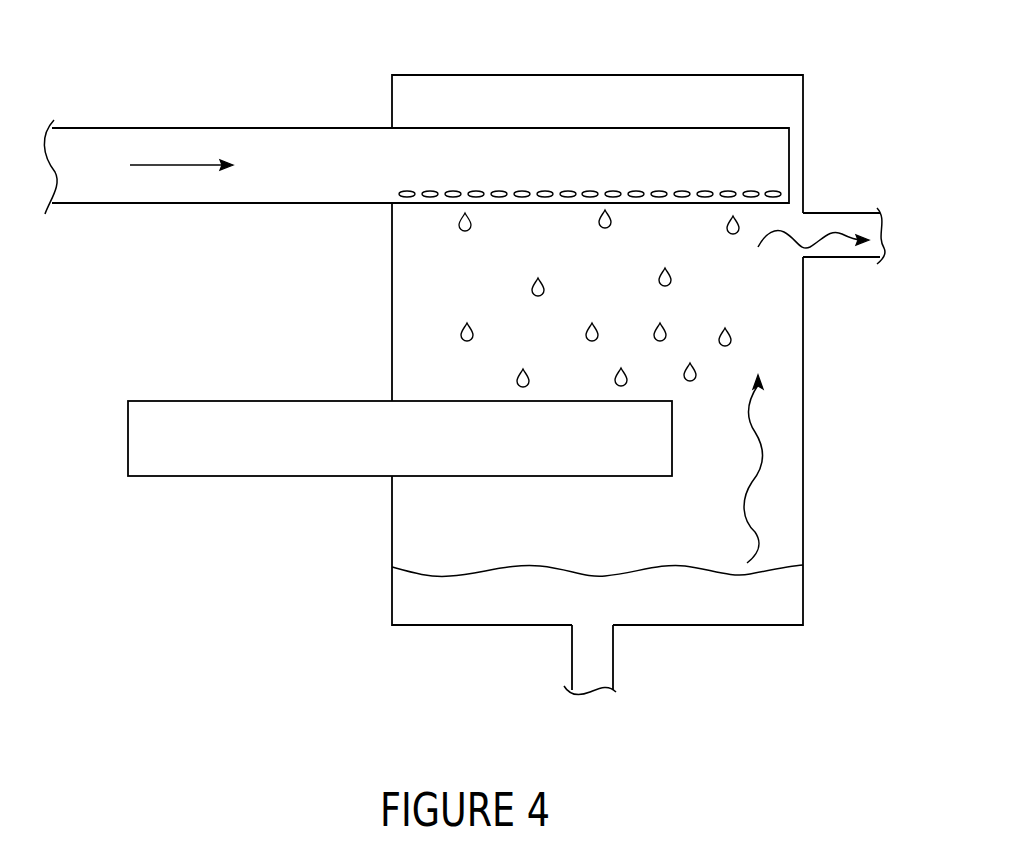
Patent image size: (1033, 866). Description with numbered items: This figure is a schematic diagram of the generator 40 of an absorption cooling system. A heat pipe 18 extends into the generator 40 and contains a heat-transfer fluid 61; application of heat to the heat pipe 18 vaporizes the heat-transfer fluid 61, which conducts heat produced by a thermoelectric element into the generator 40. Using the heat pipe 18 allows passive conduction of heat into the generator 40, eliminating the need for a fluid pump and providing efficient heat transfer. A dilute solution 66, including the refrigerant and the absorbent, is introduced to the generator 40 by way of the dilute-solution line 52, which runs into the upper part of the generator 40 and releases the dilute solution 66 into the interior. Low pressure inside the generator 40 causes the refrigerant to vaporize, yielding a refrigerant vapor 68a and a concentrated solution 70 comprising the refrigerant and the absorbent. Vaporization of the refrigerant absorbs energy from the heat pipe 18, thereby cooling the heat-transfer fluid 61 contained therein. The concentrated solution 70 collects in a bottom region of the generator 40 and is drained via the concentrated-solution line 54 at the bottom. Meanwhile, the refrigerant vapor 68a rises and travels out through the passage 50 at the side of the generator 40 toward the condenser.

The generator 40 is at (725, 75).
The dilute-solution line 52 is at (343, 128).
The dilute solution 66 is at (183, 165).
The passage 50 is at (841, 213).
The refrigerant vapor 68a is at (807, 246).
The heat pipe 18 is at (312, 400).
The heat-transfer fluid 61 is at (400, 438).
The concentrated solution 70 is at (597, 587).
The concentrated-solution line 54 is at (614, 667).